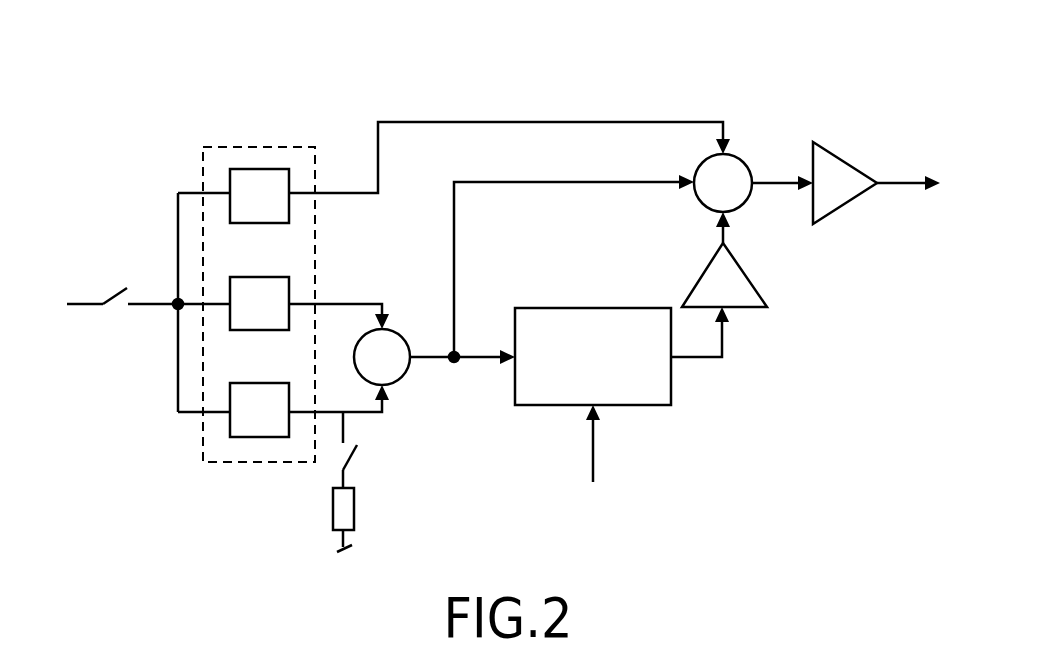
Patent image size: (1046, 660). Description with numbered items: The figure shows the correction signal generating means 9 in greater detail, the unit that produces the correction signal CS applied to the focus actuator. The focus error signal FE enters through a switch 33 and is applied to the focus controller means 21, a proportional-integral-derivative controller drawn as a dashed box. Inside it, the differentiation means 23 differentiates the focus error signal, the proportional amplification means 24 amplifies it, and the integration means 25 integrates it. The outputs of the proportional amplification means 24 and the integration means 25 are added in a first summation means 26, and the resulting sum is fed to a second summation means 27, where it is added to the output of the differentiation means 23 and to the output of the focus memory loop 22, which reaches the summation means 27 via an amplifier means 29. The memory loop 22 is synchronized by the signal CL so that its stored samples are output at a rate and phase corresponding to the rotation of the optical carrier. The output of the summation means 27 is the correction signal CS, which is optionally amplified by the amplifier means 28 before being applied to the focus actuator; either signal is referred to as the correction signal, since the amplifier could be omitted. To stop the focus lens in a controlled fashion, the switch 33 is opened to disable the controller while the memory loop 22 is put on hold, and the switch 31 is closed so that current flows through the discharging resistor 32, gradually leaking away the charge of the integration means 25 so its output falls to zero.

The correction signal generating means 9 is at (191, 41).
The focus controller means 21 is at (298, 146).
The focus memory loop 22 is at (588, 305).
The differentiation means 23 is at (230, 178).
The proportional amplification means 24 is at (230, 312).
The integration means 25 is at (230, 424).
The summation means 26 is at (398, 332).
The summation means 27 is at (745, 155).
The amplifier means 28 is at (847, 155).
The amplifier means 29 is at (742, 268).
The switch 31 is at (365, 457).
The discharging resistor 32 is at (358, 508).
The switch 33 is at (112, 280).